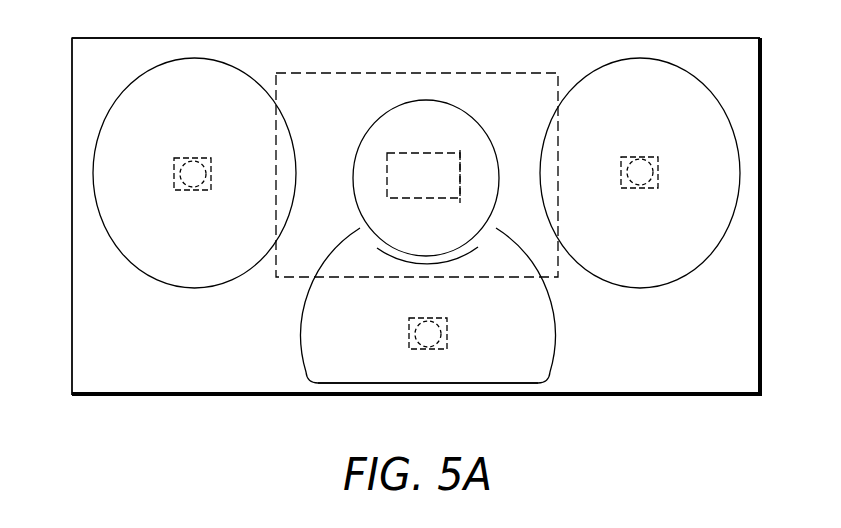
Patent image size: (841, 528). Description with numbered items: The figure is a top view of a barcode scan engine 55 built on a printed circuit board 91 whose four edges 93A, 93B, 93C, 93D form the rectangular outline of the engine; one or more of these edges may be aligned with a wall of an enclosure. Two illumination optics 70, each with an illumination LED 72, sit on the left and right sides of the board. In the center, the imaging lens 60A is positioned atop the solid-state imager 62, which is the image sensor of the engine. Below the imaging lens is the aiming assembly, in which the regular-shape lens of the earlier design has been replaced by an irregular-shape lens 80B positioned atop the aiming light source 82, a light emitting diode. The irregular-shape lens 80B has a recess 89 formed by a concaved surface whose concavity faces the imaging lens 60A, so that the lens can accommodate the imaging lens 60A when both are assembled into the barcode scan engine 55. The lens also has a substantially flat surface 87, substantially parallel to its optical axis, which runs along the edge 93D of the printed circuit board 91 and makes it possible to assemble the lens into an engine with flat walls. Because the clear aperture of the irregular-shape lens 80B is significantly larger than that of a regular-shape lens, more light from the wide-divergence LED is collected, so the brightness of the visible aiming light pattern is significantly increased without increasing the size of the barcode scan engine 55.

The barcode scan engine 55 is at (776, 75).
The edge 93A is at (72, 218).
The edge 93B is at (87, 38).
The edge 93C is at (762, 160).
The edge 93D is at (265, 397).
The printed circuit board 91 is at (752, 270).
The illumination optics 70 is at (141, 70).
The illumination LED 72 is at (213, 174).
The imaging lens 60A is at (477, 120).
The solid-state imager 62 is at (428, 152).
The recess 89 is at (377, 248).
The irregular-shape lens 80B is at (553, 327).
The aiming light source 82 is at (449, 334).
The flat surface 87 is at (509, 383).